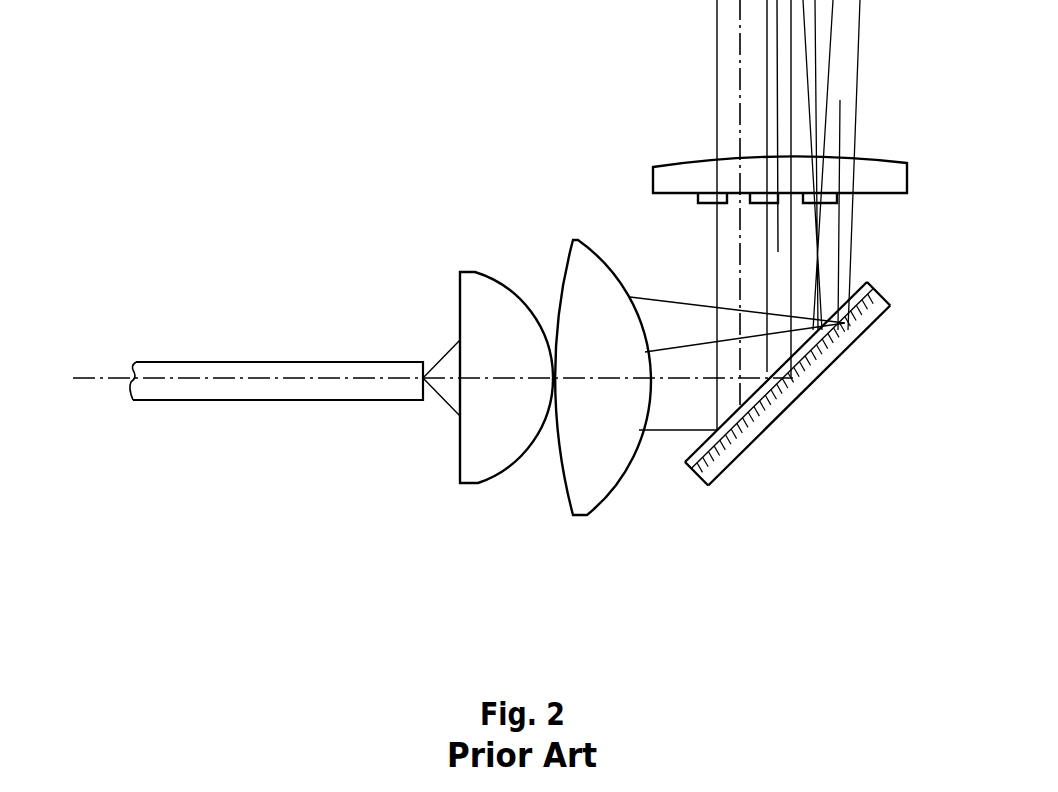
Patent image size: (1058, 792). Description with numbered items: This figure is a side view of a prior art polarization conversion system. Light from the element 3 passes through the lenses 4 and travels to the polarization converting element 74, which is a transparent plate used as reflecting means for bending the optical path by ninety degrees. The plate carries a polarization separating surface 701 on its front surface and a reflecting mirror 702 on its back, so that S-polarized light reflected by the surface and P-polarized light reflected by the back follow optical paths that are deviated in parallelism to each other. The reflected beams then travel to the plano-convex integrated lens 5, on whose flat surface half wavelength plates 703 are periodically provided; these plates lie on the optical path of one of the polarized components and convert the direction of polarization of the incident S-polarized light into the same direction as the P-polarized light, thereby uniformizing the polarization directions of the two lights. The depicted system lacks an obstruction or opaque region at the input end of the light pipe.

The optical fiber 3 is at (208, 362).
The collimating lens system 4 is at (628, 235).
The plano-convex integrated lens 5 is at (662, 163).
The polarization separating surface 701 is at (853, 282).
The reflecting mirror 702 is at (845, 347).
The half wavelength plate 703 is at (697, 205).
The polarization converting element 74 is at (821, 357).